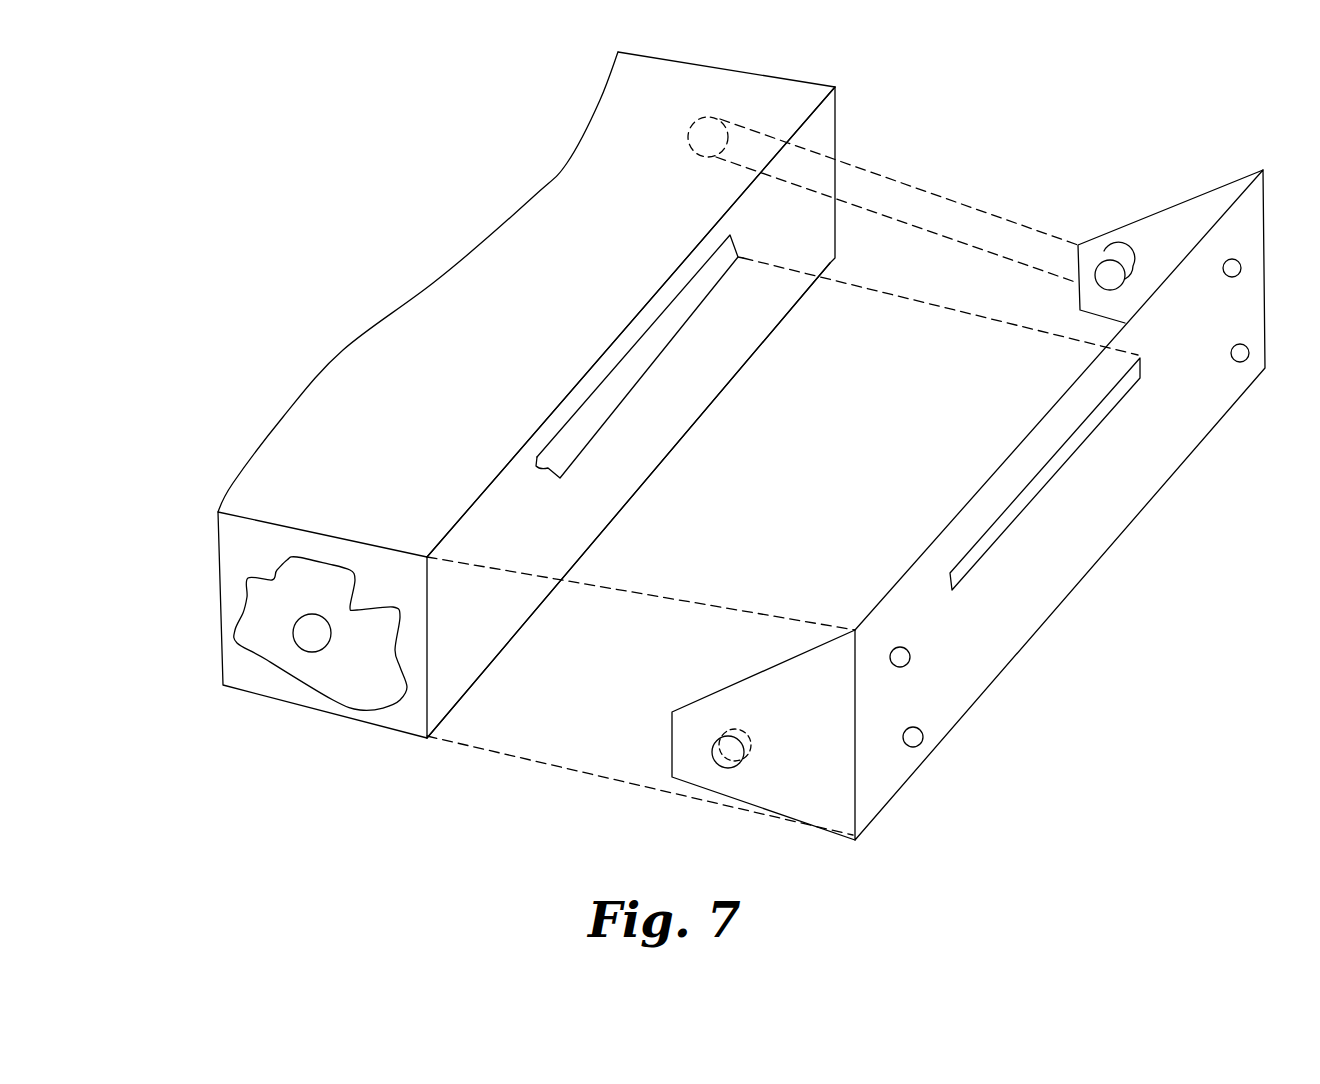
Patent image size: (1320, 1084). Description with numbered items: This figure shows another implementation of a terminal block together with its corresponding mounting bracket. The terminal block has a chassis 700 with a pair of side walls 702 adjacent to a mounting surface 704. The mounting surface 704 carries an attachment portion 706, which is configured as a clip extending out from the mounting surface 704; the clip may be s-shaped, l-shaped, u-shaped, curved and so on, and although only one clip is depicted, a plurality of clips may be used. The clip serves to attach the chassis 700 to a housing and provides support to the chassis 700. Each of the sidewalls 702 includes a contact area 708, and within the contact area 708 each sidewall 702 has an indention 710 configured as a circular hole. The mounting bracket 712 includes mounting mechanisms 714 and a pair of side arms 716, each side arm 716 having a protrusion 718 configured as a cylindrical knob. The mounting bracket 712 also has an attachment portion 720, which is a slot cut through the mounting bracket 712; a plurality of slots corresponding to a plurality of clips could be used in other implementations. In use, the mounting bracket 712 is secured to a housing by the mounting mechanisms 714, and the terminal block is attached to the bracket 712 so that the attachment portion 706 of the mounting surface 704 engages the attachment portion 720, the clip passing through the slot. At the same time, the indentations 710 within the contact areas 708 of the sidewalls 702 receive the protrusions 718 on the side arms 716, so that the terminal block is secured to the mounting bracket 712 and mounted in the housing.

The chassis 700 is at (426, 343).
The side walls 702 is at (386, 733).
The mounting surface 704 is at (491, 632).
The attachment portion 706 is at (650, 343).
The contact area 708 is at (351, 683).
The indention 710 is at (298, 660).
The mounting bracket 712 is at (1106, 515).
The mounting mechanisms 714 is at (928, 740).
The side arms 716 is at (838, 766).
The protrusion 718 is at (743, 771).
The attachment portion 720 is at (981, 564).